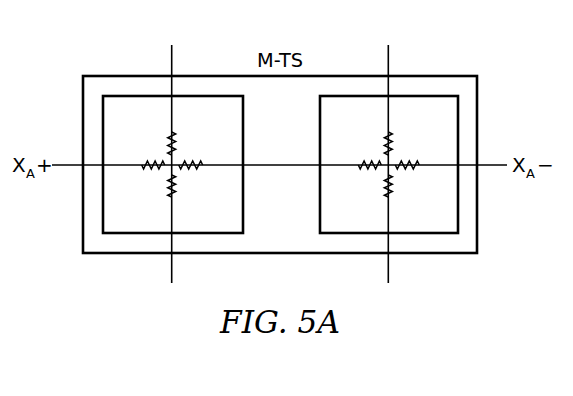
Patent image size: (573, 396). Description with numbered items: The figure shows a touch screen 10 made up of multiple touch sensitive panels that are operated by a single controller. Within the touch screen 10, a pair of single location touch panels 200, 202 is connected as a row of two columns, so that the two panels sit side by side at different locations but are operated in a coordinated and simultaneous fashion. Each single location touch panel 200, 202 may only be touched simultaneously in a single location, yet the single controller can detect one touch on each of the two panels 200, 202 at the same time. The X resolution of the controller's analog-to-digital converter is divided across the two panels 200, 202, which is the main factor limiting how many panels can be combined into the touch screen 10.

The touch screen 10 is at (477, 115).
The single location touch panel 200 is at (243, 131).
The single location touch panel 202 is at (320, 199).